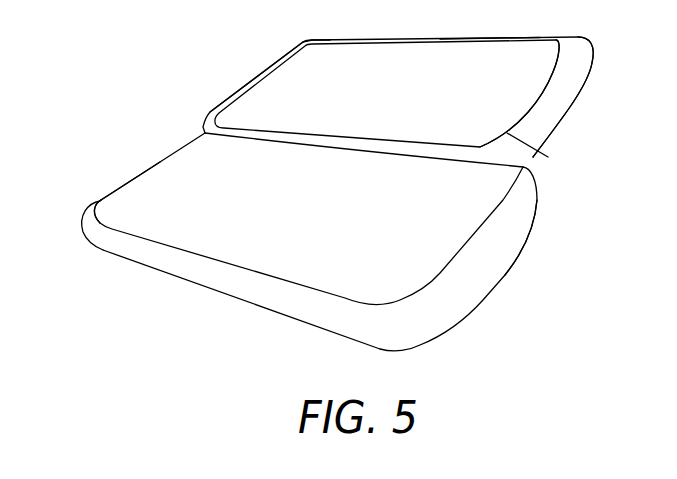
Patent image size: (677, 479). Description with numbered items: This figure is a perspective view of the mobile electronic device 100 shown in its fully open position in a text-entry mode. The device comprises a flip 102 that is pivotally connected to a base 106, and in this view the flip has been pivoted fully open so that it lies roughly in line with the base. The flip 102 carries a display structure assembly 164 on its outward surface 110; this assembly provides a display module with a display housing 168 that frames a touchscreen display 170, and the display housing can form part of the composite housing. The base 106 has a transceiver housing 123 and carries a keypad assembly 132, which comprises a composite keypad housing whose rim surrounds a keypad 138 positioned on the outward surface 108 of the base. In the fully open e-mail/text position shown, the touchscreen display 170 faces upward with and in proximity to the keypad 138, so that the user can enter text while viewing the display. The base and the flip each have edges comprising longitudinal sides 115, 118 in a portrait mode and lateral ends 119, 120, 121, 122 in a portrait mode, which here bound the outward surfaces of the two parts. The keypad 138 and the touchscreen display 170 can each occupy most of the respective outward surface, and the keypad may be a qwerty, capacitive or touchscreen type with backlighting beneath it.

The mobile electronic device 100 is at (185, 93).
The flip 102 is at (590, 44).
The base 106 is at (478, 300).
The outward surface 108 is at (121, 228).
The outward surface 110 is at (307, 40).
The longitudinal side 115 is at (212, 290).
The longitudinal side 118 is at (382, 38).
The lateral end 119 is at (128, 182).
The lateral end 120 is at (283, 51).
The lateral end 121 is at (566, 117).
The lateral end 122 is at (530, 231).
The transceiver housing 123 is at (98, 202).
The keypad assembly 132 is at (190, 156).
The keypad 138 is at (310, 275).
The display structure assembly 164 is at (548, 157).
The display housing 168 is at (587, 84).
The touchscreen display 170 is at (485, 50).